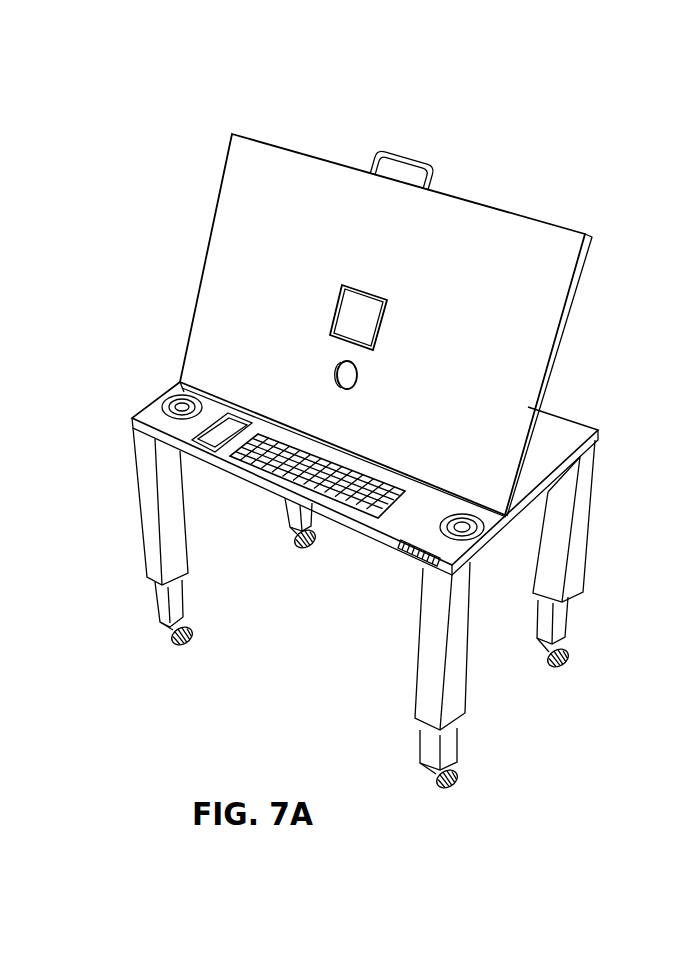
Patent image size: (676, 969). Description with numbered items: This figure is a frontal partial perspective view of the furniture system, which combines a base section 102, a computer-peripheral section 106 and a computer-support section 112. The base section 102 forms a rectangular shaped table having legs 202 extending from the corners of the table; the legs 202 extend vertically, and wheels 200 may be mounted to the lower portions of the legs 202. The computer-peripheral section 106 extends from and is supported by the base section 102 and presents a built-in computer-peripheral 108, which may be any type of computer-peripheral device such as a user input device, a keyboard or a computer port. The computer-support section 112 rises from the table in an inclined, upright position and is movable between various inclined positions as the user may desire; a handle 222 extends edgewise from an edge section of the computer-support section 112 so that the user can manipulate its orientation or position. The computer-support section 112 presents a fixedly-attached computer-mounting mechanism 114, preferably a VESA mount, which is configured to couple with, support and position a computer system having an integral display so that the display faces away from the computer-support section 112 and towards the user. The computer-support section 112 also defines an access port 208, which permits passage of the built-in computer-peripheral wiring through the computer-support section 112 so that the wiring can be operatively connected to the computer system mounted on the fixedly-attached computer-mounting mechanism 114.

The base section 102 is at (470, 563).
The computer-peripheral section 106 is at (370, 540).
The built-in computer-peripheral 108 is at (270, 440).
The computer-support section 112 is at (315, 159).
The fixedly-attached computer-mounting mechanism 114 is at (383, 327).
The wheels 200 is at (312, 548).
The legs 202 is at (148, 494).
The access port 208 is at (360, 381).
The handle 222 is at (398, 151).